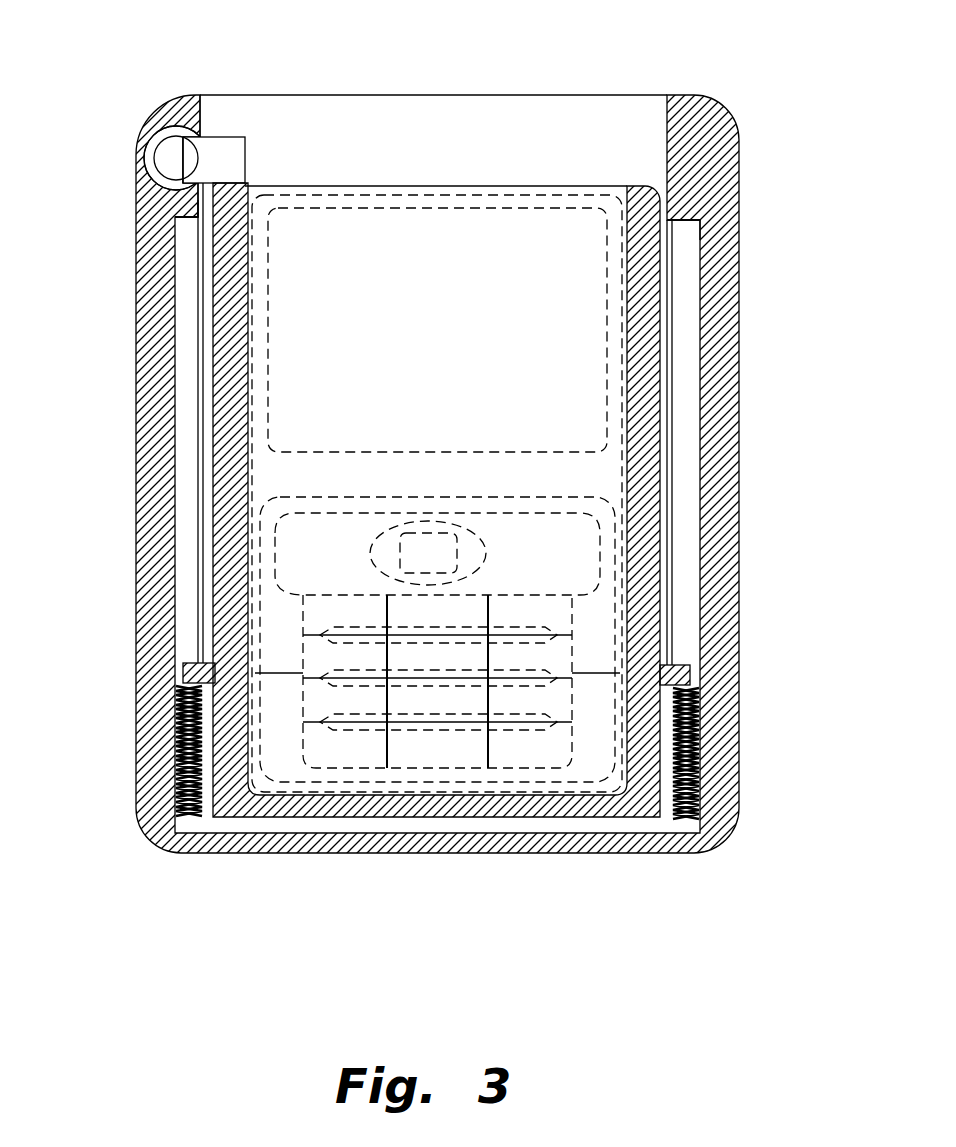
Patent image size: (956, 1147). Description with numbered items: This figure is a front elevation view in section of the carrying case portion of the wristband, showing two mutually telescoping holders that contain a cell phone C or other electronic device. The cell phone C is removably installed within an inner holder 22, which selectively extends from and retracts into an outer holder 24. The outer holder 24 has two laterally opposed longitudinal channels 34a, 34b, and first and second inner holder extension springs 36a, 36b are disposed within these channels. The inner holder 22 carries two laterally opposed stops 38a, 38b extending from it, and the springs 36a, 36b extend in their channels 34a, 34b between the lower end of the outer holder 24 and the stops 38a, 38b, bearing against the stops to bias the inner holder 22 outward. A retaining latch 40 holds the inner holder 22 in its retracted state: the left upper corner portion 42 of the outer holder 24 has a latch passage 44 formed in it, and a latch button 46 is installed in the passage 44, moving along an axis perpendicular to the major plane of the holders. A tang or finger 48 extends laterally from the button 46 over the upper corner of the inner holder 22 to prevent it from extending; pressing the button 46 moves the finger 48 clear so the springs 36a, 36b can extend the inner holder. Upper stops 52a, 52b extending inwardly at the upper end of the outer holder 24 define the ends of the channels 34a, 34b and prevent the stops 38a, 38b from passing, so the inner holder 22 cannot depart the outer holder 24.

The inner holder 22 is at (213, 404).
The outer holder 24 is at (136, 468).
The longitudinal channel 34a is at (185, 560).
The longitudinal channel 34b is at (690, 555).
The inner holder extension spring 36a is at (182, 714).
The inner holder extension spring 36b is at (705, 700).
The stop 38a is at (190, 672).
The stop 38b is at (688, 663).
The retaining latch 40 is at (222, 128).
The upper corner portion 42 is at (143, 128).
The latch passage 44 is at (145, 157).
The latch button 46 is at (188, 130).
The tang 48 is at (248, 163).
The upper stop 52a is at (187, 232).
The upper stop 52b is at (695, 282).
The cell phone C is at (437, 197).